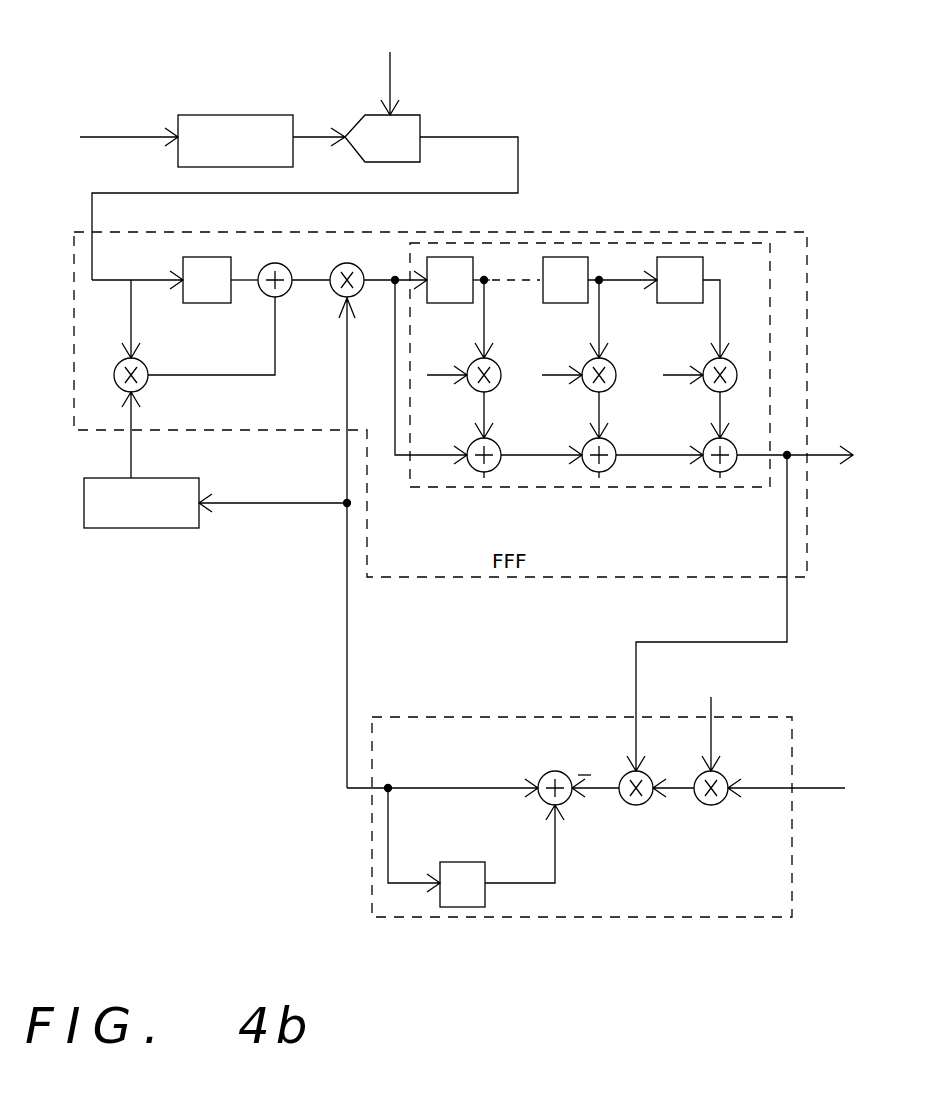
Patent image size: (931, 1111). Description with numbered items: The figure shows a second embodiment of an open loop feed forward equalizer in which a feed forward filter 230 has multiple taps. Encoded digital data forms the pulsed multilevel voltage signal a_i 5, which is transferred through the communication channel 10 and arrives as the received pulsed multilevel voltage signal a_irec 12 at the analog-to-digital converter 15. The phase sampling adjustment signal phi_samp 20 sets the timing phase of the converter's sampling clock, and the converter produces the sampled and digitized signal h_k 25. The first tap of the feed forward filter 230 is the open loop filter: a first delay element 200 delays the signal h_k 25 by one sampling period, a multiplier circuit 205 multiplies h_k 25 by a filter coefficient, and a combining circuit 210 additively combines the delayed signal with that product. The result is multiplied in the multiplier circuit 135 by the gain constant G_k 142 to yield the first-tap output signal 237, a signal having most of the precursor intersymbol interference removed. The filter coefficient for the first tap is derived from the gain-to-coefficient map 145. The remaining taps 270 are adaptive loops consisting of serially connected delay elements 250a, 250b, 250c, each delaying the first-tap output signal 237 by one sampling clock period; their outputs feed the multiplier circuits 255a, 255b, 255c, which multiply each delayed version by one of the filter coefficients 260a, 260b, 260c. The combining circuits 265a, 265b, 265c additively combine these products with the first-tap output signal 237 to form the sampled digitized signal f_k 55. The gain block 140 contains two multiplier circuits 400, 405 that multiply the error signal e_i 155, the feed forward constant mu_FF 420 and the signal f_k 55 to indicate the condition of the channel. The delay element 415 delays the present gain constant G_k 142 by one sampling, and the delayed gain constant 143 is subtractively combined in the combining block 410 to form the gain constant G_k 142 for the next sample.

The pulsed multilevel voltage signal a_i 5 is at (50, 119).
The communication channel 10 is at (218, 115).
The received pulsed multilevel voltage signal a_irec 12 is at (309, 110).
The analog-to-digital converter 15 is at (372, 115).
The phase sampling adjustment signal phi_samp 20 is at (412, 34).
The sampled and digitized received pulsed multilevel voltage signal h_k 25 is at (467, 114).
The multiplier circuit 135 is at (347, 263).
The gain block 140 is at (372, 897).
The gain constant G_k 142 is at (326, 808).
The delayed gain constant G_k-1 143 is at (557, 866).
The gain-to-coefficient map 145 is at (138, 530).
The error signal e_i 155 is at (865, 812).
The first delay element 200 is at (210, 257).
The multiplier circuit 205 is at (150, 368).
The combining circuit 210 is at (275, 263).
The feed forward filter 230 is at (744, 232).
The output f_1 of multiplier circuit 237 is at (388, 290).
The delay element 250a is at (450, 257).
The delay element 250b is at (560, 257).
The delay element 250c is at (675, 257).
The multiplier circuit 255a is at (501, 363).
The multiplier circuit 255b is at (616, 363).
The multiplier circuit 255c is at (737, 363).
The filter coefficient w_x 260a is at (468, 452).
The filter coefficient w_x 260b is at (558, 451).
The filter coefficient w_x 260c is at (672, 414).
The combining circuit 265a is at (484, 473).
The combining circuit 265b is at (599, 473).
The combining circuit 265c is at (720, 473).
The remaining taps 270 is at (417, 487).
The digitized and sampled pulsed multilevel voltage signal f_k 55 is at (852, 466).
The multiplier circuit 400 is at (722, 772).
The multiplier circuit 405 is at (645, 772).
The combining block 410 is at (580, 753).
The delay element 415 is at (487, 875).
The feed forward constant mu_FF 420 is at (720, 673).